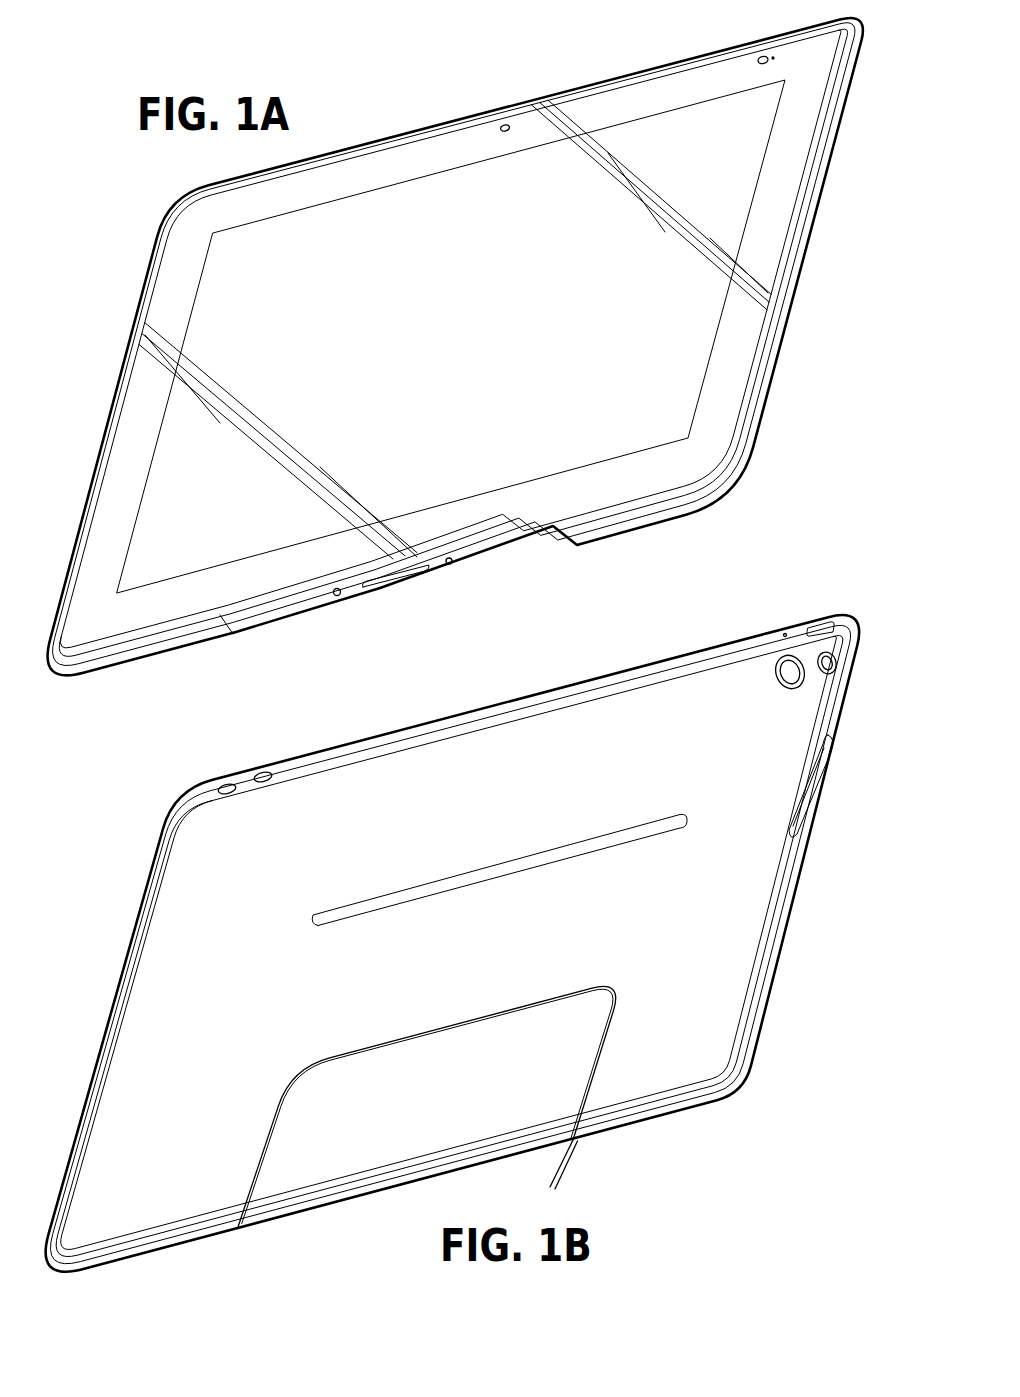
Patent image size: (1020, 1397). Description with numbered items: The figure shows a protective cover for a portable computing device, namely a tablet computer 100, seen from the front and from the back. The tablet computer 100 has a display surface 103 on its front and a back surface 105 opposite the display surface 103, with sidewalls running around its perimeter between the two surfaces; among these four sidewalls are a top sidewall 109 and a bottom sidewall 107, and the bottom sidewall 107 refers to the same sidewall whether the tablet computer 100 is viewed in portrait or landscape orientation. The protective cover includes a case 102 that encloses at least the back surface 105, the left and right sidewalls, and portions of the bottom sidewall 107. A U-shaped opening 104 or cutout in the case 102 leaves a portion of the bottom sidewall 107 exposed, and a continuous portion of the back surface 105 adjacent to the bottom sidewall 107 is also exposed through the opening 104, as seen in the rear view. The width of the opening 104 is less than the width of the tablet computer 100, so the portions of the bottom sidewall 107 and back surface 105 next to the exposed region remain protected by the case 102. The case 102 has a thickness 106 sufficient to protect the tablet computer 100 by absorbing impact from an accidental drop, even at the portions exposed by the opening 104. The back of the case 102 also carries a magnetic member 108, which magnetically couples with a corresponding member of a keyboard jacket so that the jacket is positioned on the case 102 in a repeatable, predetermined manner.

In FIG. 1A, the tablet computer 100 is at (446, 138).
In FIG. 1A, the case 102 is at (795, 299).
In FIG. 1B, the case 102 is at (124, 967).
In FIG. 1A, the display surface 103 is at (460, 330).
In FIG. 1B, the opening 104 is at (447, 1027).
In FIG. 1B, the back surface 105 is at (453, 1109).
In FIG. 1B, the thickness 106 is at (545, 1170).
In FIG. 1A, the bottom sidewall 107 is at (480, 553).
In FIG. 1B, the magnetic member 108 is at (508, 862).
In FIG. 1B, the top sidewall 109 is at (505, 710).